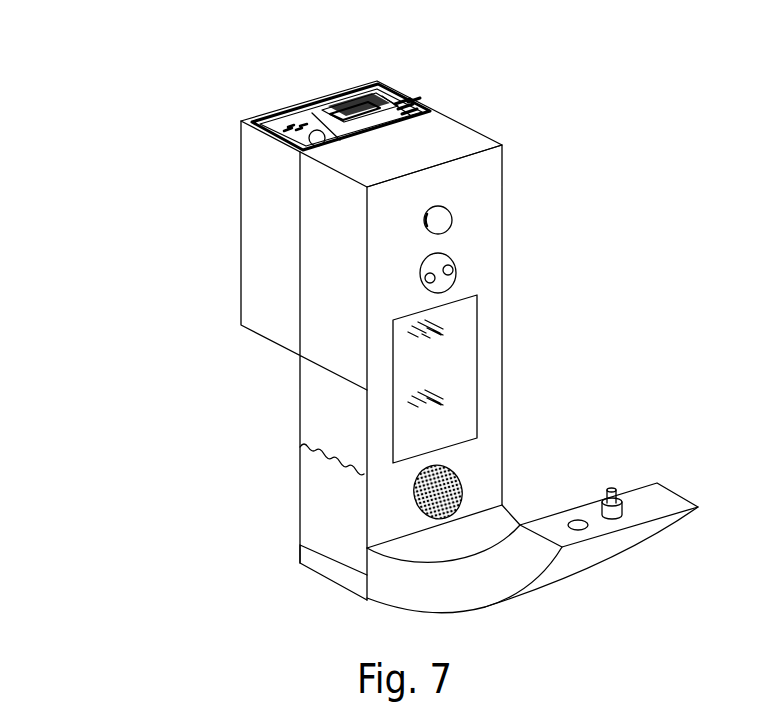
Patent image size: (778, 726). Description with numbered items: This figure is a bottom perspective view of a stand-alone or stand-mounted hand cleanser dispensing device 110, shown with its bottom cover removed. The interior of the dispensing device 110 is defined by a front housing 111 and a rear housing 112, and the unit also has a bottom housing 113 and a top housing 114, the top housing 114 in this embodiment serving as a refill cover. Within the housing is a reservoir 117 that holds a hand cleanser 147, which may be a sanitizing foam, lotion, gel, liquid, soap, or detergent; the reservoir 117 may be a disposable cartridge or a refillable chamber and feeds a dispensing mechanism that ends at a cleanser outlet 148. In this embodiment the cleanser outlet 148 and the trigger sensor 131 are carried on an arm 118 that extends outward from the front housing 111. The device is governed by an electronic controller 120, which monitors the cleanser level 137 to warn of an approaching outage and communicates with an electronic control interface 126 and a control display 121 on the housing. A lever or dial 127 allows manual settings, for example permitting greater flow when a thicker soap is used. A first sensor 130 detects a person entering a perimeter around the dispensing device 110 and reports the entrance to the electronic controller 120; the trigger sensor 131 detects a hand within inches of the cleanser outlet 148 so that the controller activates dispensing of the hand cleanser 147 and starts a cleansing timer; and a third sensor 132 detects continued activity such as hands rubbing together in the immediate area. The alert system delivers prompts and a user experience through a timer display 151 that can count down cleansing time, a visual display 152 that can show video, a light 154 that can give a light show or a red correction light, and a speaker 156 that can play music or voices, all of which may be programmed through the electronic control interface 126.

The dispensing device 110 is at (117, 97).
The front housing 111 is at (487, 170).
The rear housing 112 is at (250, 242).
The bottom housing 113 is at (440, 127).
The top housing 114 is at (330, 581).
The reservoir 117 is at (313, 418).
The arm 118 is at (607, 567).
The electronic controller 120 is at (387, 85).
The control display 121 is at (410, 103).
The electronic control interface 126 is at (347, 103).
The manual settings lever or dial 127 is at (293, 127).
The first sensor 130 is at (451, 270).
The trigger sensor 131 is at (580, 520).
The third sensor 132 is at (437, 262).
The cleanser level 137 is at (333, 462).
The hand cleanser 147 is at (333, 462).
The cleanser outlet 148 is at (614, 497).
The timer display 151 is at (435, 307).
The visual display 152 is at (435, 307).
The light 154 is at (452, 212).
The speaker 156 is at (460, 478).